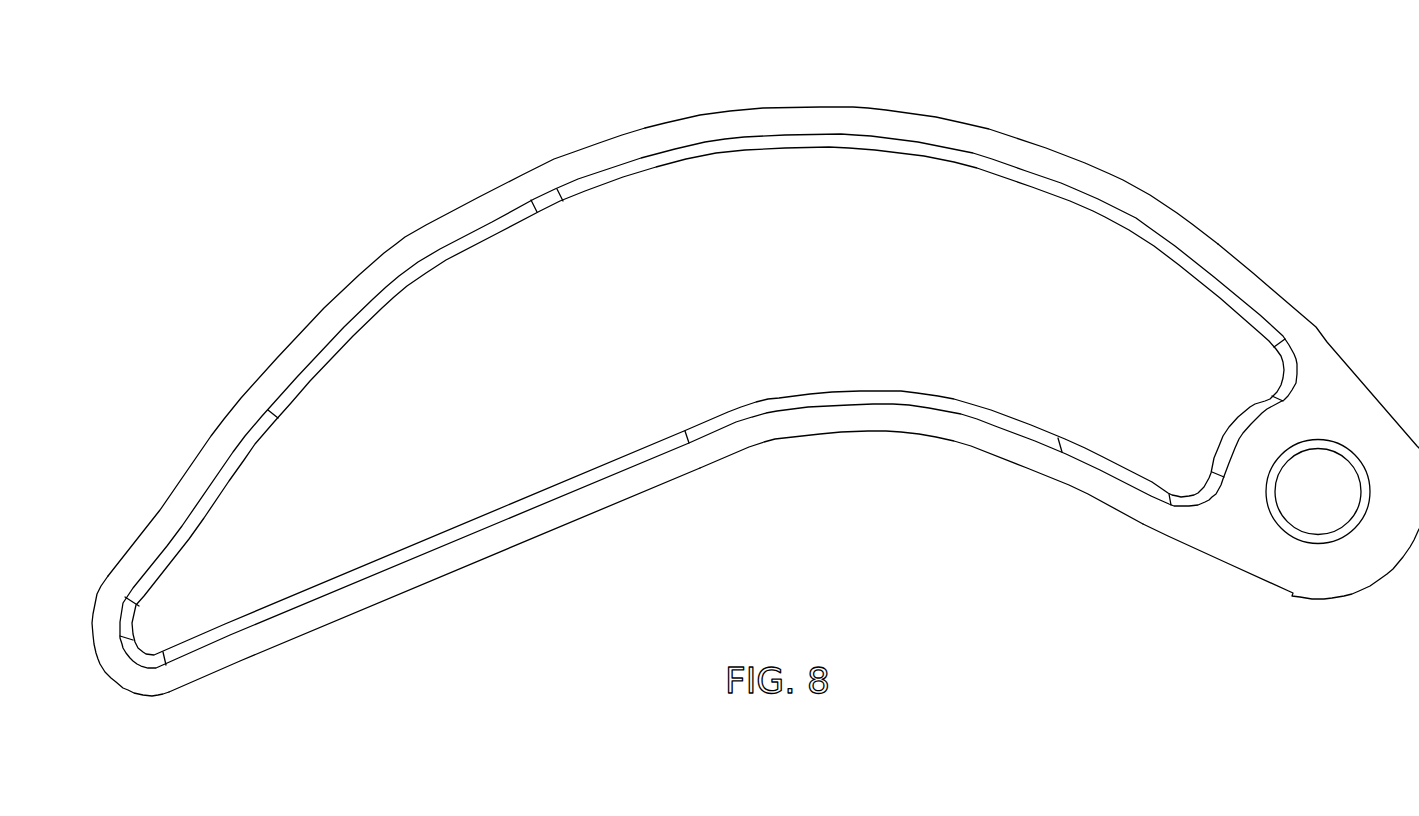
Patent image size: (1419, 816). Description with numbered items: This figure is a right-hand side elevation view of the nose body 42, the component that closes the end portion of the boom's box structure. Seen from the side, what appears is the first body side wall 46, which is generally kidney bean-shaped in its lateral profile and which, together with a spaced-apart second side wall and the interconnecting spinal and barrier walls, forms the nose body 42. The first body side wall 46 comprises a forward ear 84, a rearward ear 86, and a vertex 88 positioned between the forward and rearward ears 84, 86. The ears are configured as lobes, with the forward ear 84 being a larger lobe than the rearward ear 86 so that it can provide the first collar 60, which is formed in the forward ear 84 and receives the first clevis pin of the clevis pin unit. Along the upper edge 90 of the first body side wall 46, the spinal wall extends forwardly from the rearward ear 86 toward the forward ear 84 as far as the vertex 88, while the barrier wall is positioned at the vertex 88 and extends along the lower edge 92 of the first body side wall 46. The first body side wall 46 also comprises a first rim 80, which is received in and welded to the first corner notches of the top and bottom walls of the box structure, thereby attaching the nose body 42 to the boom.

The nose body 42 is at (755, 357).
The first body side wall 46 is at (708, 401).
The first collar 60 is at (1318, 555).
The first rim 80 is at (931, 131).
The forward ear 84 is at (1281, 421).
The rearward ear 86 is at (130, 570).
The vertex 88 is at (921, 479).
The upper edge 90 is at (421, 300).
The lower edge 92 is at (434, 580).